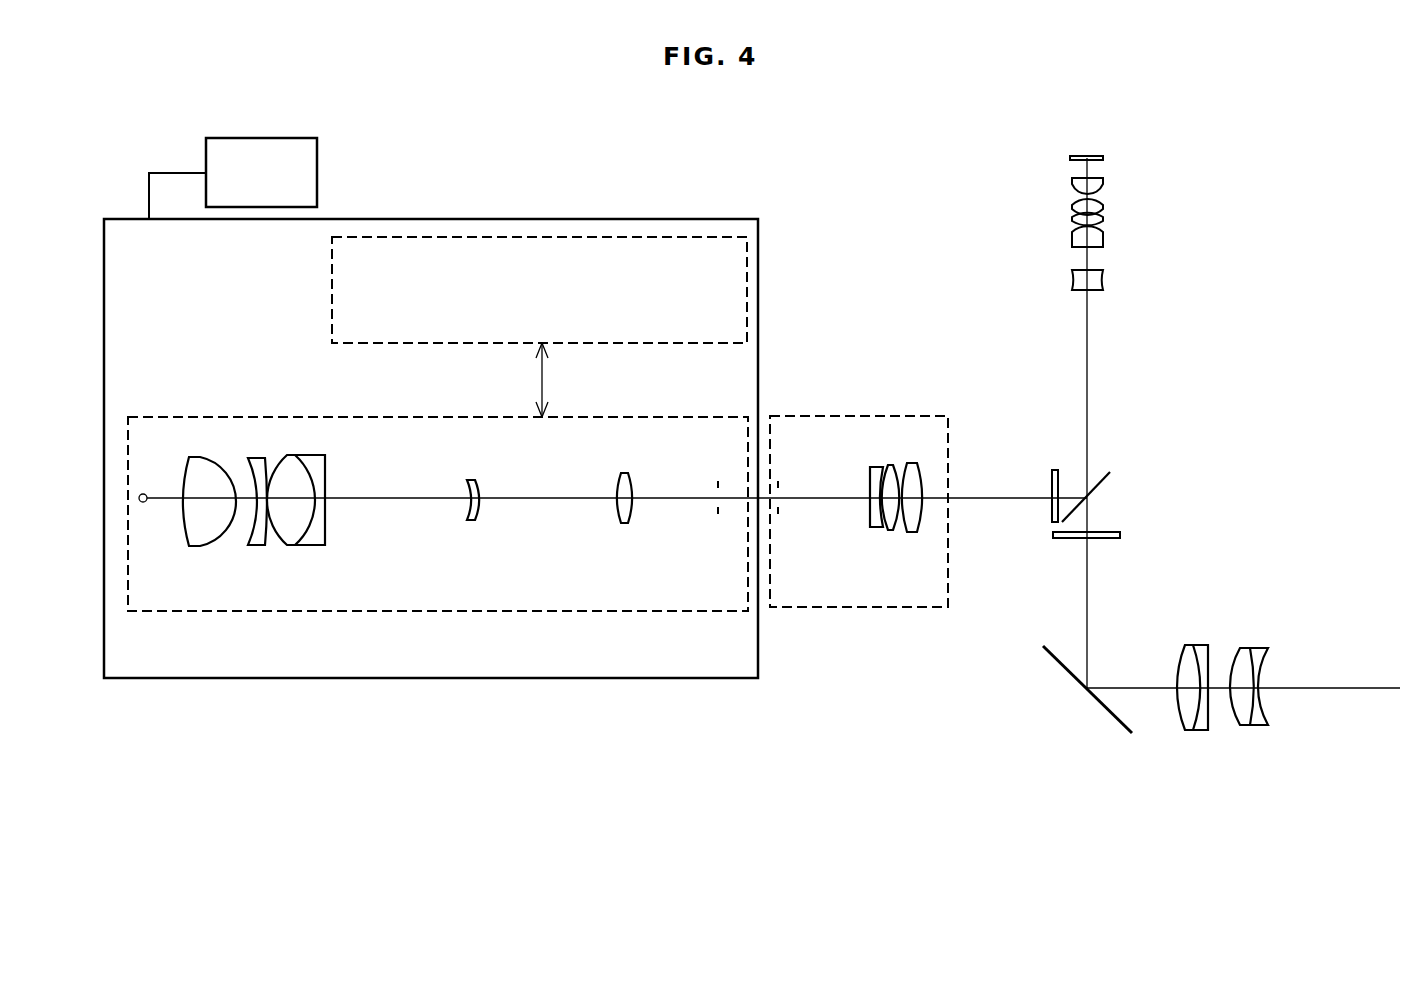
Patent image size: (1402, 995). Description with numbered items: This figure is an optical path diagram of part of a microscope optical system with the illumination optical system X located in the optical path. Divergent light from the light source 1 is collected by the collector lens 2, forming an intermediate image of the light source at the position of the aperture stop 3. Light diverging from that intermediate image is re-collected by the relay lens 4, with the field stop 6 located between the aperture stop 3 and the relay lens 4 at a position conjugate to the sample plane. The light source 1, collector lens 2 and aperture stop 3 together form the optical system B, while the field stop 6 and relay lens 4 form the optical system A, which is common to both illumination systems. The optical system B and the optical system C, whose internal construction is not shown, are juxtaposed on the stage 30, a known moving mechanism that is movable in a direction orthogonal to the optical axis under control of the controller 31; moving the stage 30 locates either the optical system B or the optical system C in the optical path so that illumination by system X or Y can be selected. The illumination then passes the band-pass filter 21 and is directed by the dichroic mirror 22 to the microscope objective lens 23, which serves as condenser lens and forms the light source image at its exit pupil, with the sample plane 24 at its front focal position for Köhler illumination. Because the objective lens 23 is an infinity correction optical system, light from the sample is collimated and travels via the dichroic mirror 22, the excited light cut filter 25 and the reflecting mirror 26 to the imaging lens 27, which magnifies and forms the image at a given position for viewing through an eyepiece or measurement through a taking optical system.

The light source 1 is at (145, 505).
The collector lens 2 is at (182, 562).
The aperture stop 3 is at (719, 514).
The relay lens 4 is at (867, 558).
The field stop 6 is at (779, 514).
The band-pass filter 21 is at (1052, 521).
The dichroic mirror 22 is at (1110, 475).
The microscope objective lens 23 is at (1135, 173).
The sample plane 24 is at (1105, 158).
The excited light cut filter 25 is at (1120, 535).
The reflecting mirror 26 is at (1115, 718).
The imaging lens 27 is at (1177, 748).
The moving mechanism (stage) 30 is at (700, 219).
The controller 31 is at (268, 138).
The optical system A is at (856, 415).
The optical system B is at (483, 611).
The optical system C is at (538, 237).